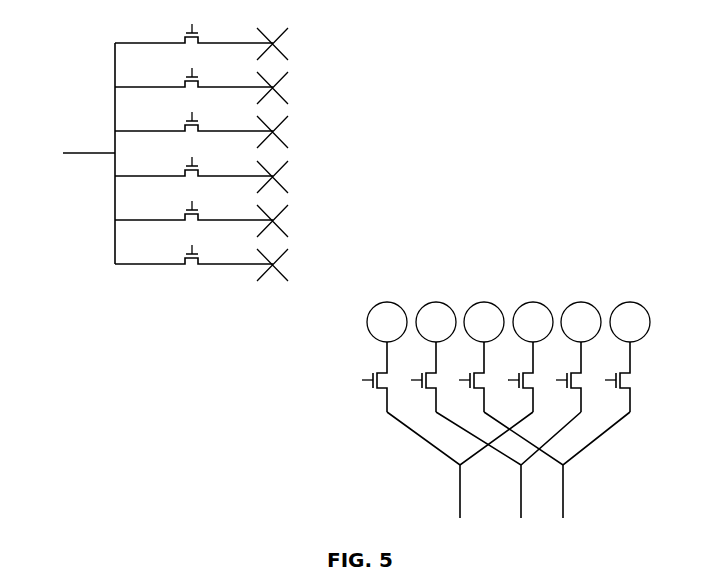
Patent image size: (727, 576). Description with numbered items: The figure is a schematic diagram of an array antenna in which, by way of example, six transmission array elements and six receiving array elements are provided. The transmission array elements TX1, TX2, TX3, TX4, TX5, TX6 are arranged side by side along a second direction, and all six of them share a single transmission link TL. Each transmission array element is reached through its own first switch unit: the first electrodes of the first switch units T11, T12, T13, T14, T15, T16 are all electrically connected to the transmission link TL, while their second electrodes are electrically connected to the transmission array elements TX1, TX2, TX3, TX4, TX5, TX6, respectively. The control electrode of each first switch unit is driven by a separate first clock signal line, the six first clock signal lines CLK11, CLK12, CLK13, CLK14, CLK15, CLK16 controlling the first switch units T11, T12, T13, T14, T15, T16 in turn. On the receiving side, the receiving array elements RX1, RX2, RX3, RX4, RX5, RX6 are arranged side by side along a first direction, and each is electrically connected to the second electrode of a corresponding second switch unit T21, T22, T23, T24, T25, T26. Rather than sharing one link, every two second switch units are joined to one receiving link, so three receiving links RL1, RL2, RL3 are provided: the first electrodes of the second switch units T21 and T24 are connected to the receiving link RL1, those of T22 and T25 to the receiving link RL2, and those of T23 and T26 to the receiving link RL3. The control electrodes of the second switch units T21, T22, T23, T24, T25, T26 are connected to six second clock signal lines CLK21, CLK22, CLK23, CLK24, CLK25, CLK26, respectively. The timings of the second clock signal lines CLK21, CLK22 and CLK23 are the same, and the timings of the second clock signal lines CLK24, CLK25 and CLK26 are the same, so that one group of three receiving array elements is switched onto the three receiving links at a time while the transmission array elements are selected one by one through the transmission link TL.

The transmission link TL is at (78, 153).
The first switch unit T11 is at (194, 36).
The first switch unit T12 is at (194, 80).
The first switch unit T13 is at (194, 124).
The first switch unit T14 is at (194, 169).
The first switch unit T15 is at (194, 213).
The first switch unit T16 is at (194, 257).
The first clock signal line CLK11 is at (192, 21).
The first clock signal line CLK12 is at (192, 65).
The first clock signal line CLK13 is at (192, 109).
The first clock signal line CLK14 is at (192, 154).
The first clock signal line CLK15 is at (192, 198).
The first clock signal line CLK16 is at (192, 242).
The transmission array element TX1 is at (292, 44).
The transmission array element TX2 is at (292, 88).
The transmission array element TX3 is at (292, 132).
The transmission array element TX4 is at (292, 177).
The transmission array element TX5 is at (292, 221).
The transmission array element TX6 is at (292, 265).
The receiving array element RX1 is at (387, 311).
The receiving array element RX2 is at (436, 311).
The receiving array element RX3 is at (484, 311).
The receiving array element RX4 is at (533, 311).
The receiving array element RX5 is at (581, 311).
The receiving array element RX6 is at (630, 311).
The second switch unit T21 is at (379, 377).
The second switch unit T22 is at (428, 377).
The second switch unit T23 is at (476, 377).
The second switch unit T24 is at (525, 377).
The second switch unit T25 is at (573, 377).
The second switch unit T26 is at (622, 377).
The second clock signal line CLK21 is at (362, 378).
The second clock signal line CLK22 is at (411, 378).
The second clock signal line CLK23 is at (459, 378).
The second clock signal line CLK24 is at (508, 378).
The second clock signal line CLK25 is at (556, 378).
The second clock signal line CLK26 is at (605, 378).
The receiving link RL1 is at (460, 476).
The receiving link RL2 is at (508, 476).
The receiving link RL3 is at (557, 476).